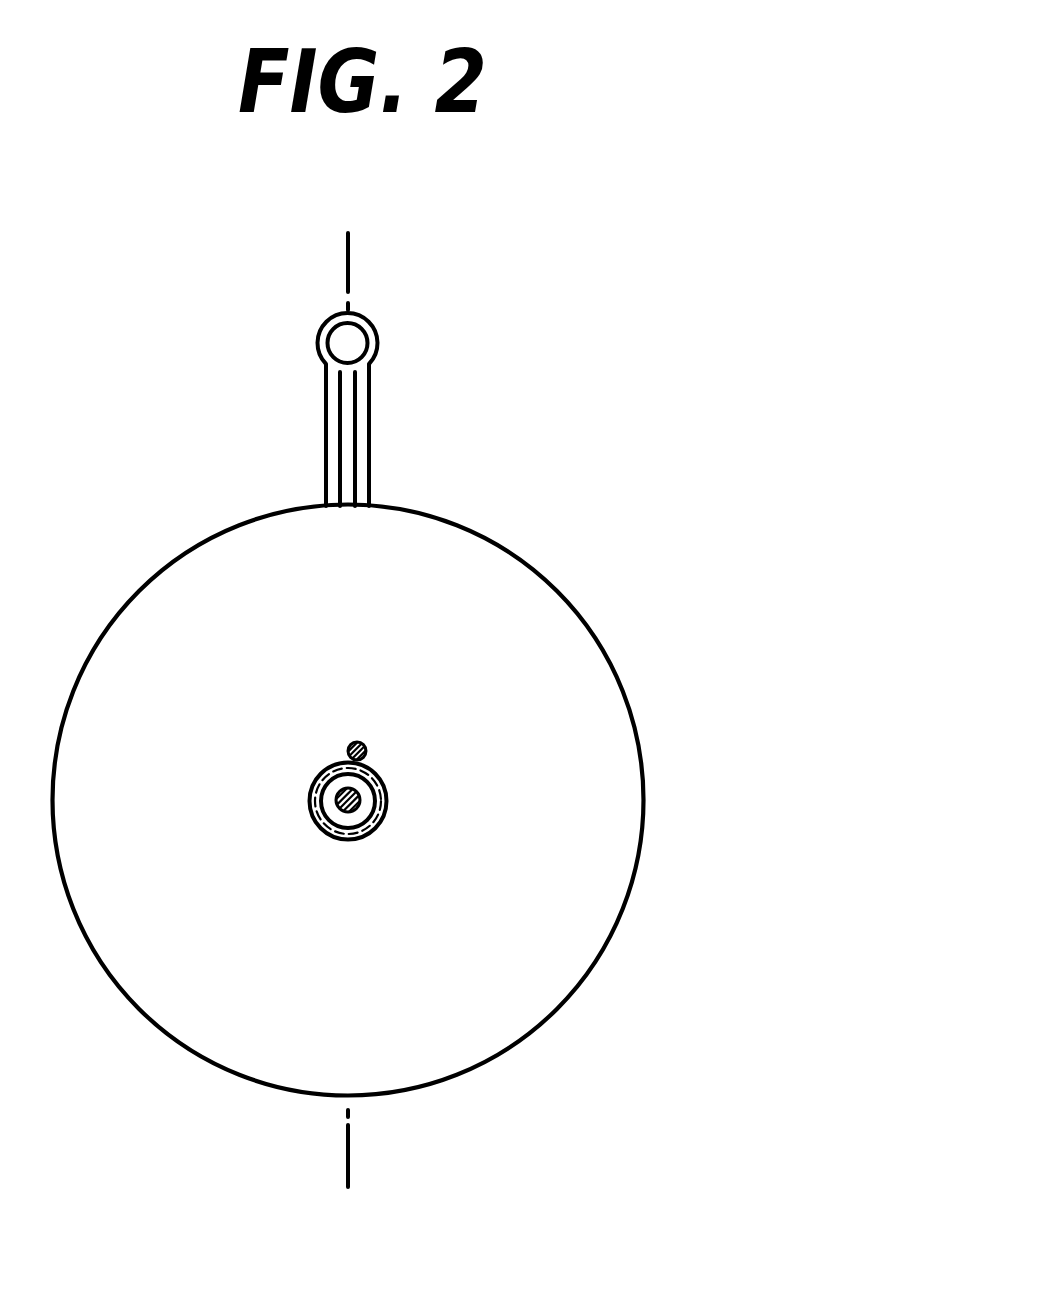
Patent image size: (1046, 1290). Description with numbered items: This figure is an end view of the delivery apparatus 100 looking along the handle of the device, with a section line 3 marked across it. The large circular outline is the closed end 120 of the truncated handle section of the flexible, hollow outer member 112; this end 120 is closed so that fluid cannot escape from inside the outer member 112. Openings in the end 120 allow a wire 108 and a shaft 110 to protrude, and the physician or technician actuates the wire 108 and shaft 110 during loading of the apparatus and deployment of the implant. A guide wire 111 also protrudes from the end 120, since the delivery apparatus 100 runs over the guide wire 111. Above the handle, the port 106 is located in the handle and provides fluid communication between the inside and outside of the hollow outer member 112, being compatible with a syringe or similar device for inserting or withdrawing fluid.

The section line 3- 3 is at (366, 242).
The delivery apparatus 100 is at (765, 364).
The port 106 is at (373, 347).
The wire 108 is at (362, 742).
The shaft 110 is at (387, 793).
The guide wire 111 is at (356, 806).
The outer member 112 is at (500, 493).
The end 120 is at (575, 993).